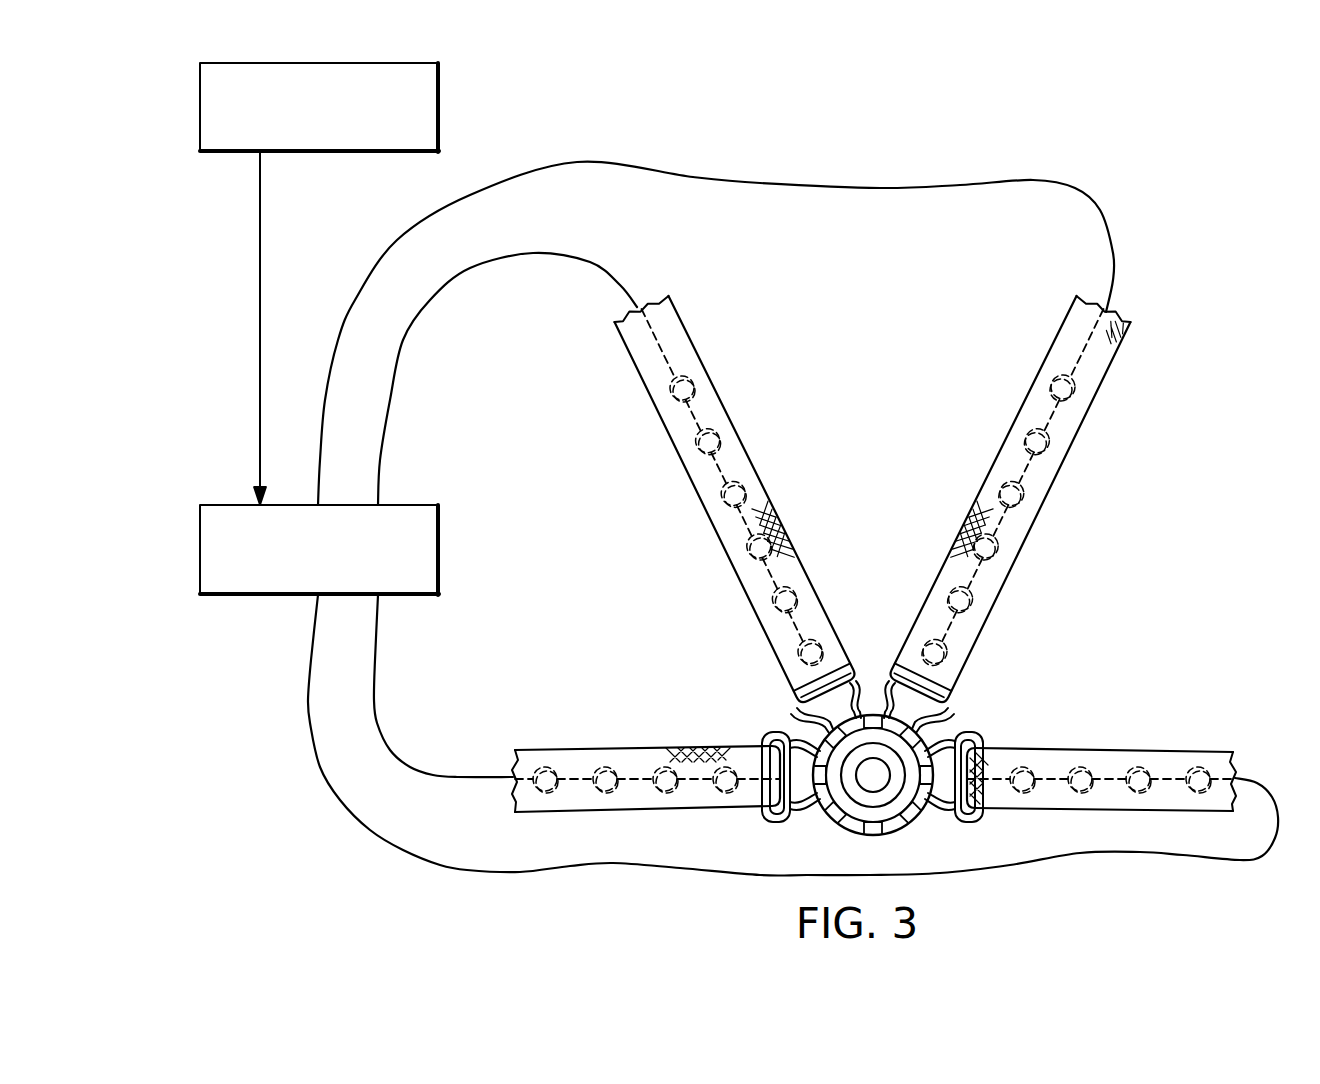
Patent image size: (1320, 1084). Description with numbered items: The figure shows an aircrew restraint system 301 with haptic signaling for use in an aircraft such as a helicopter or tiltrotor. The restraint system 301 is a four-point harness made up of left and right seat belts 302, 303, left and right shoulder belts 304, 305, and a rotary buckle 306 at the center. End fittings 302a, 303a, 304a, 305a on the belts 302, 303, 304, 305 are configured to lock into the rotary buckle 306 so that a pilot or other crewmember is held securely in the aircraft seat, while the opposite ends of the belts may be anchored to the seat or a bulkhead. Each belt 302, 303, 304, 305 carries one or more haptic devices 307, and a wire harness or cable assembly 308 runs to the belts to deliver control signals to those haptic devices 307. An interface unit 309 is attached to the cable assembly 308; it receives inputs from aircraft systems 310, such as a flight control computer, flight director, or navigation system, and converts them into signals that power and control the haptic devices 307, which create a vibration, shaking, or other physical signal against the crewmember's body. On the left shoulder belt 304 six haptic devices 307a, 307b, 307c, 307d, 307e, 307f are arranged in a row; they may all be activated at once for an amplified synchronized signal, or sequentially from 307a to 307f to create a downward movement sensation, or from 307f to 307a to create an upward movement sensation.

The aircrew restraint system 301 is at (1203, 356).
The left seat belt 302 is at (1085, 748).
The end fitting 302a is at (982, 818).
The right seat belt 303 is at (645, 747).
The end fitting 303a is at (767, 732).
The left shoulder belt 304 is at (975, 500).
The end fitting 304a is at (950, 700).
The right shoulder belt 305 is at (728, 412).
The end fitting 305a is at (855, 673).
The rotary buckle 306 is at (838, 826).
The haptic device 307 is at (718, 494).
The haptic device 307a is at (1097, 390).
The haptic device 307b is at (1072, 445).
The haptic device 307c is at (1047, 497).
The haptic device 307d is at (1022, 550).
The haptic device 307e is at (998, 604).
The haptic device 307f is at (973, 657).
The cable assembly 308 is at (870, 188).
The interface unit 309 is at (200, 549).
The aircraft systems 310 is at (200, 104).